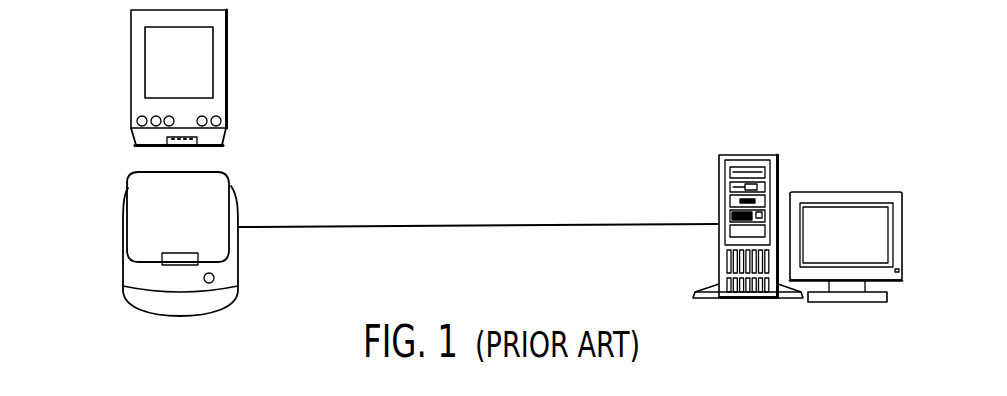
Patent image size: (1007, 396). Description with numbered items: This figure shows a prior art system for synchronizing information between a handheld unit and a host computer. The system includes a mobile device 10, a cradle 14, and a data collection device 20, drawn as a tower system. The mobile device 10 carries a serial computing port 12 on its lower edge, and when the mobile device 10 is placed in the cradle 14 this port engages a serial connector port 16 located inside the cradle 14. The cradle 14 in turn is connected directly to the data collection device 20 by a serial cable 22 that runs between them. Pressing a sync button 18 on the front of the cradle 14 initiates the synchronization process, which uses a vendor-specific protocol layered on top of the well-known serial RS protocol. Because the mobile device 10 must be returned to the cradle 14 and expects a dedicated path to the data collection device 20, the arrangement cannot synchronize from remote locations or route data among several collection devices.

The mobile device 10 is at (250, 43).
The serial computing port 12 is at (188, 146).
The cradle 14 is at (103, 188).
The serial connector port 16 is at (178, 253).
The sync button 18 is at (214, 276).
The data collection device 20 is at (798, 155).
The serial cable 22 is at (517, 225).